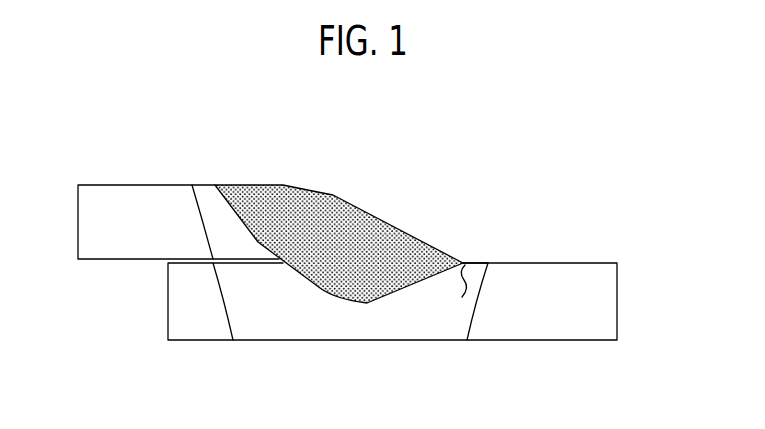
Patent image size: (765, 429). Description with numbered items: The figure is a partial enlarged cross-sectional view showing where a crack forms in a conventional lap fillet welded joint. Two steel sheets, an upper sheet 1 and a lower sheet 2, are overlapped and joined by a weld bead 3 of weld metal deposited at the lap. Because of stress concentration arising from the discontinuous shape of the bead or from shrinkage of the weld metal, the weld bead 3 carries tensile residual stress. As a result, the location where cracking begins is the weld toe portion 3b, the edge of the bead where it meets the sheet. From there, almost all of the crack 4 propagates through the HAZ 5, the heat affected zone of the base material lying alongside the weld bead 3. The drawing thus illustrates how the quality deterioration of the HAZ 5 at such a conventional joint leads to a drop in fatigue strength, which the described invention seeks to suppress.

The upper sheet 1 is at (590, 305).
The lower sheet 2 is at (115, 215).
The weld bead 3 is at (367, 223).
The weld toe portion 3b is at (469, 250).
The crack 4 is at (480, 271).
The HAZ 5 is at (407, 323).